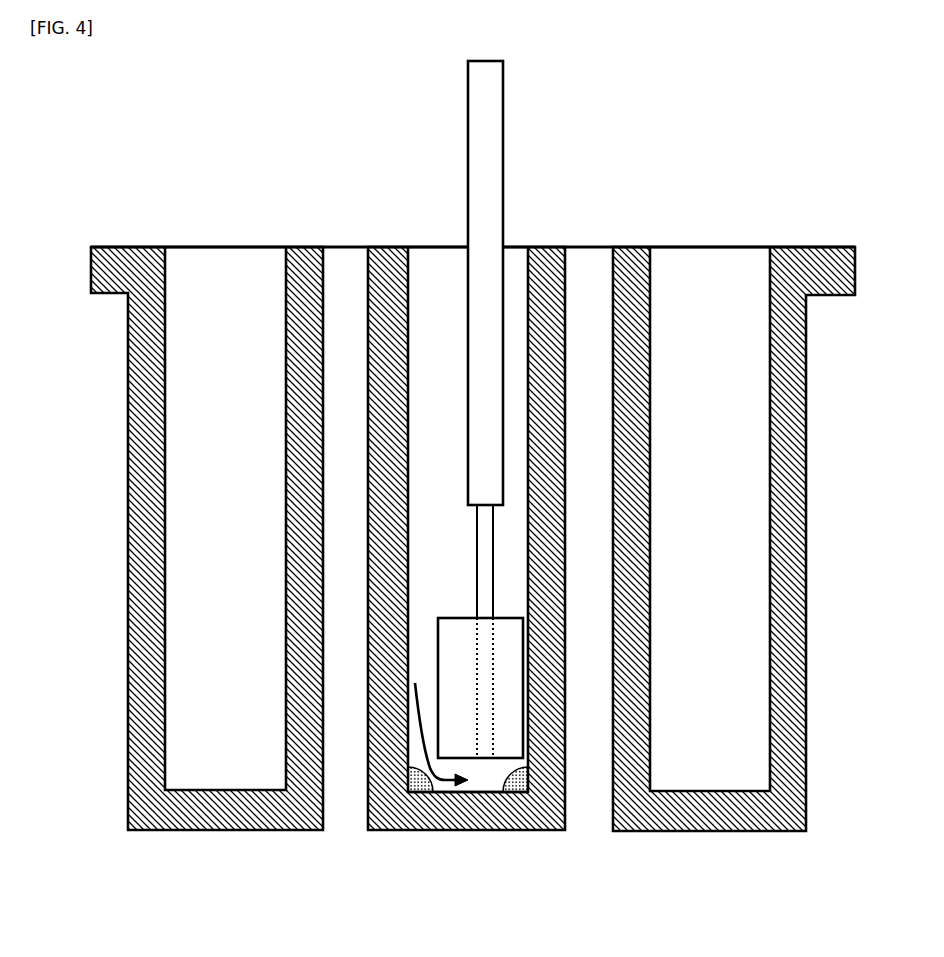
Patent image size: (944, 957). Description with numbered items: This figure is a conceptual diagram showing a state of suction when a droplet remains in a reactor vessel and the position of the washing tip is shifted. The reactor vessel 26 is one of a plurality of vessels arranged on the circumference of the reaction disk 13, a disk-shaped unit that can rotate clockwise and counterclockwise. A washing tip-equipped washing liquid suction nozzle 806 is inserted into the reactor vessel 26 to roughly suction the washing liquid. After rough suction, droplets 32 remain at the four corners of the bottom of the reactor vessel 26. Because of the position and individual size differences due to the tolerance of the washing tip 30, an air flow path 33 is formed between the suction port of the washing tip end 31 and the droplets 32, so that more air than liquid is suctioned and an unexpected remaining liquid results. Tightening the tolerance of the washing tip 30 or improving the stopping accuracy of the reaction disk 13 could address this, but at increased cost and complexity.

The reaction disk 13 is at (473, 520).
The reactor vessel 26 is at (226, 831).
The washing tip-equipped washing liquid suction nozzle 806 is at (503, 147).
The washing tip 30 is at (507, 737).
The washing tip end 31 is at (485, 760).
The droplets 32 is at (413, 793).
The air flow path 33 is at (418, 732).